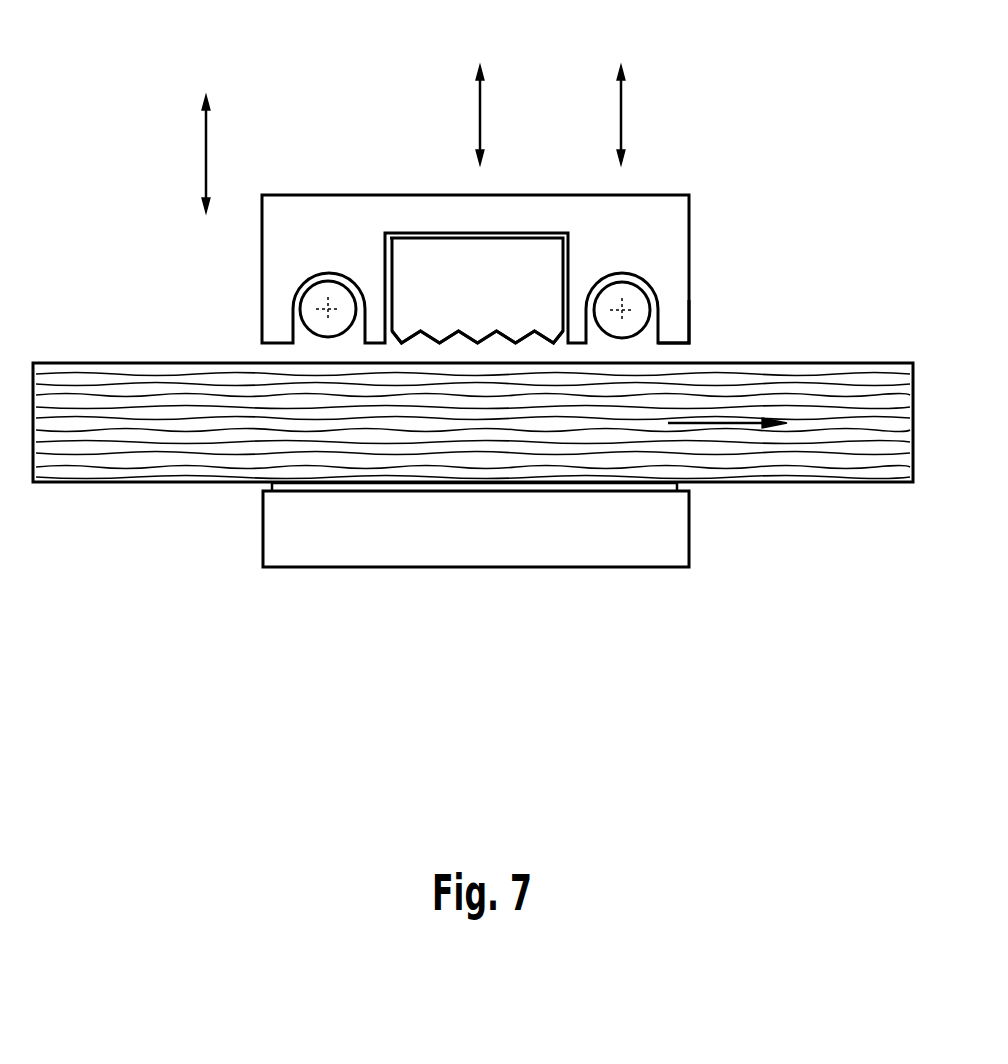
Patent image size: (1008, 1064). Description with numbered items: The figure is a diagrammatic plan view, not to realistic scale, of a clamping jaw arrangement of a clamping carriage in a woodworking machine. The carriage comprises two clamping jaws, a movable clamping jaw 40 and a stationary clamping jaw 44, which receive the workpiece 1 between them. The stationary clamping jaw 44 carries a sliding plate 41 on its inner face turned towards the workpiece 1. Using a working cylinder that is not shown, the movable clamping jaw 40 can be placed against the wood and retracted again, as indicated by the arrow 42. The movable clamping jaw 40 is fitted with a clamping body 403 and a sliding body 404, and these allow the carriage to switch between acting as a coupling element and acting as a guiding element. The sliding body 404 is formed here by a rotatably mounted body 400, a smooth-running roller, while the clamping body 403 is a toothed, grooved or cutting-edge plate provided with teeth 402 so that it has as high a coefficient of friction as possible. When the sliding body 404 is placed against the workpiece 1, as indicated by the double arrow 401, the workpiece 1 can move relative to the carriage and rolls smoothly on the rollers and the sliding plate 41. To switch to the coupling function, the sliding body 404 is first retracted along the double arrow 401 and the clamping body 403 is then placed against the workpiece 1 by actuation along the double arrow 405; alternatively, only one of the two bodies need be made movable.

The workpiece 1 is at (143, 453).
The movable clamping jaw 40 is at (293, 222).
The sliding plate 41 is at (535, 483).
The arrow 42 is at (206, 148).
The stationary clamping jaw 44 is at (347, 532).
The rotatably mounted body 400 is at (632, 324).
The double arrow 401 is at (621, 117).
The teeth 402 is at (505, 336).
The clamping body 403 is at (431, 257).
The sliding body 404 is at (300, 311).
The double arrow 405 is at (481, 112).